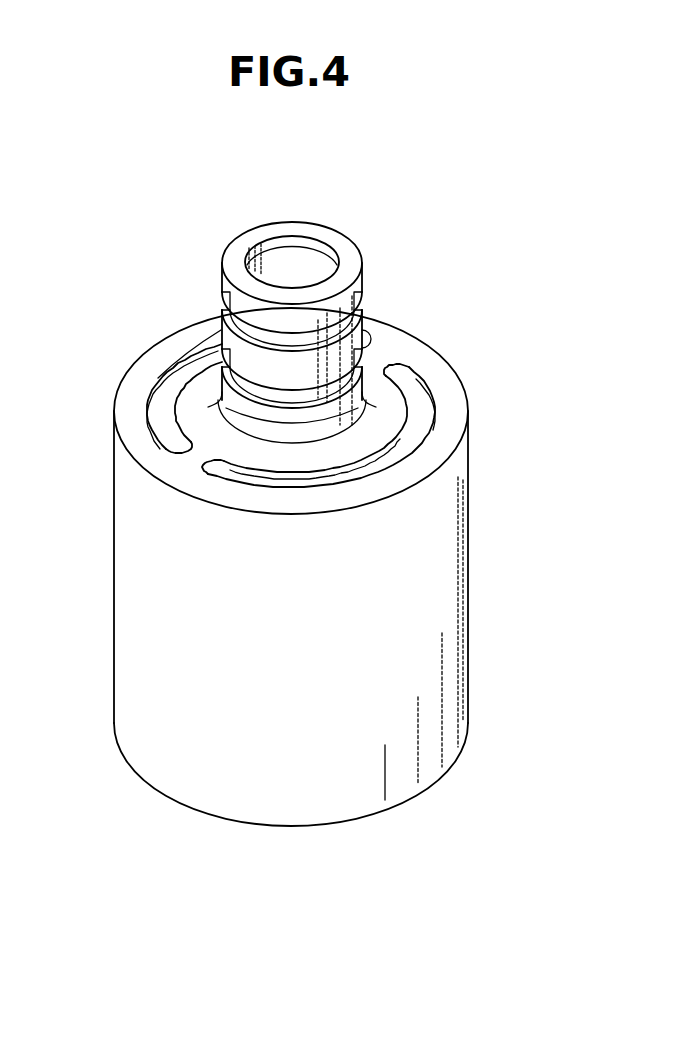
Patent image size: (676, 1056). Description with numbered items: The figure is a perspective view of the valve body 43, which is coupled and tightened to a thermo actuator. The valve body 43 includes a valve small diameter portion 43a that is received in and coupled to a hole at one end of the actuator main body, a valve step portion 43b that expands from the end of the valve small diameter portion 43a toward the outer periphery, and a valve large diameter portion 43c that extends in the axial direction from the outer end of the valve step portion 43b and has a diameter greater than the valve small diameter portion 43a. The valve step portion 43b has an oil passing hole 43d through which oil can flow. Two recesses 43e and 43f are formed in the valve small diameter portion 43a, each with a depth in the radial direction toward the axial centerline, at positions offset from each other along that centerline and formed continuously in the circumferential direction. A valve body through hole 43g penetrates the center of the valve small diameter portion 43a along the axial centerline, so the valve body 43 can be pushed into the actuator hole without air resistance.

The valve body 43 is at (465, 218).
The valve small diameter portion 43a is at (333, 237).
The valve step portion 43b is at (411, 340).
The valve large diameter portion 43c is at (292, 776).
The oil passing hole 43d is at (173, 370).
The recess 43e is at (268, 393).
The recess 43f is at (286, 347).
The valve body through hole 43g is at (305, 263).